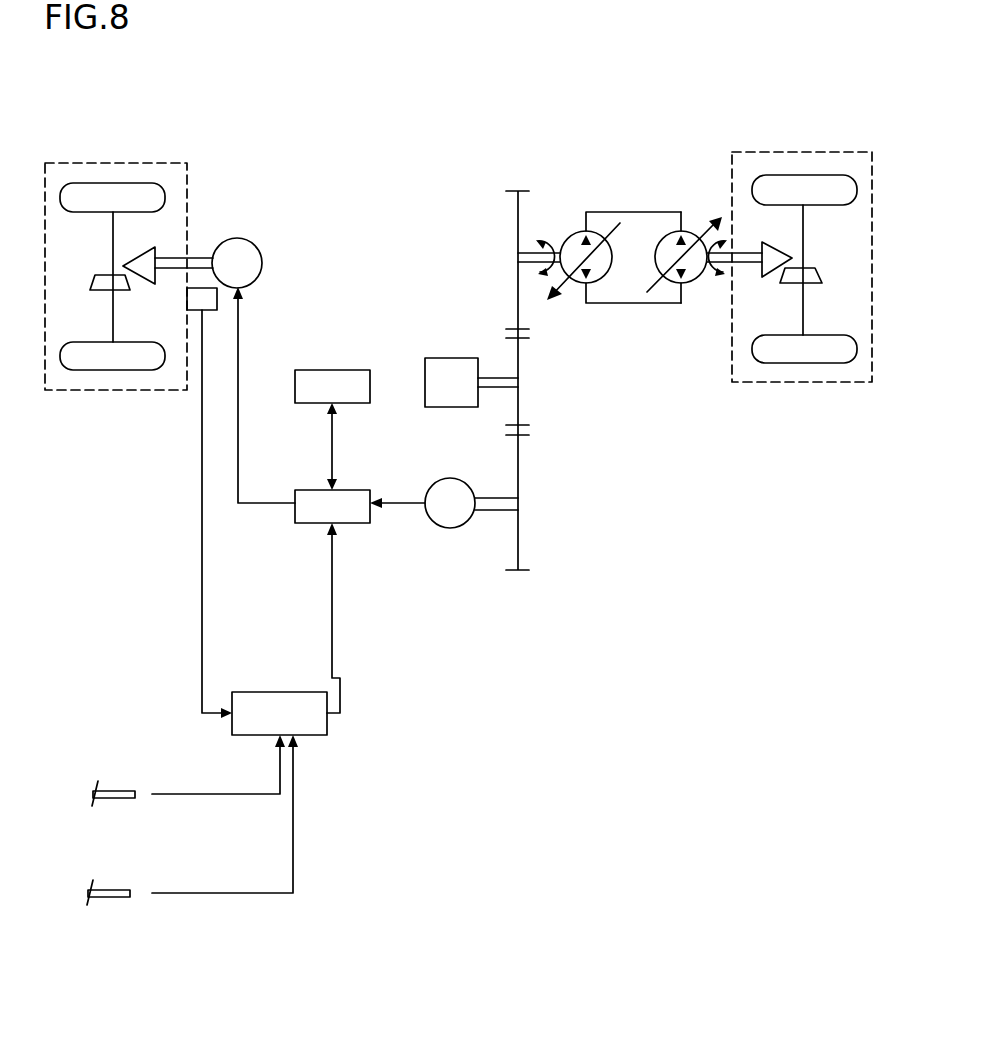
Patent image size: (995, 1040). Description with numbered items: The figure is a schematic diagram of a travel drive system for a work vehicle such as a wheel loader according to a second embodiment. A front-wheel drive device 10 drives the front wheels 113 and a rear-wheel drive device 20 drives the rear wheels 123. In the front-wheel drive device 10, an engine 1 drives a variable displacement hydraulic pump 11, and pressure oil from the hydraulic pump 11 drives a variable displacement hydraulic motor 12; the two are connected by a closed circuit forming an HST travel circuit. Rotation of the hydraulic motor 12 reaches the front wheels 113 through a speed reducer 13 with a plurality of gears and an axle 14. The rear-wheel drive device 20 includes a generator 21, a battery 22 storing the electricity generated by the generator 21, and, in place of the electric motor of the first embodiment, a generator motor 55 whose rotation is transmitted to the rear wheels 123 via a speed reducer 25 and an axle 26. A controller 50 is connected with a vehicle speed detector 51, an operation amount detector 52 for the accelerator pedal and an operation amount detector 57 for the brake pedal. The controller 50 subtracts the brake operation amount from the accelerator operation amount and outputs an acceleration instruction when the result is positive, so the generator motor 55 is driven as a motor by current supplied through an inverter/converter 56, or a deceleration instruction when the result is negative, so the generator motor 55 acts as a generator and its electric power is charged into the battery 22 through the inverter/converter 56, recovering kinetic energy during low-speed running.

The engine 1 is at (440, 358).
The front-wheel drive device 10 is at (706, 98).
The variable displacement hydraulic pump 11 is at (559, 232).
The variable displacement hydraulic motor 12 is at (692, 228).
The speed reducer 13 is at (828, 240).
The axle 14 is at (822, 251).
The rear-wheel drive device 20 is at (243, 117).
The generator 21 is at (460, 528).
The battery 22 is at (314, 370).
The speed reducer 25 is at (155, 248).
The axle 26 is at (111, 243).
The controller 50 is at (252, 692).
The vehicle speed detector 51 is at (202, 312).
The operation amount detector 52 is at (110, 778).
The generator motor 55 is at (240, 238).
The inverter/converter 56 is at (364, 524).
The operation amount detector 57 is at (110, 876).
The front wheels 113 is at (826, 175).
The rear wheels 123 is at (84, 183).